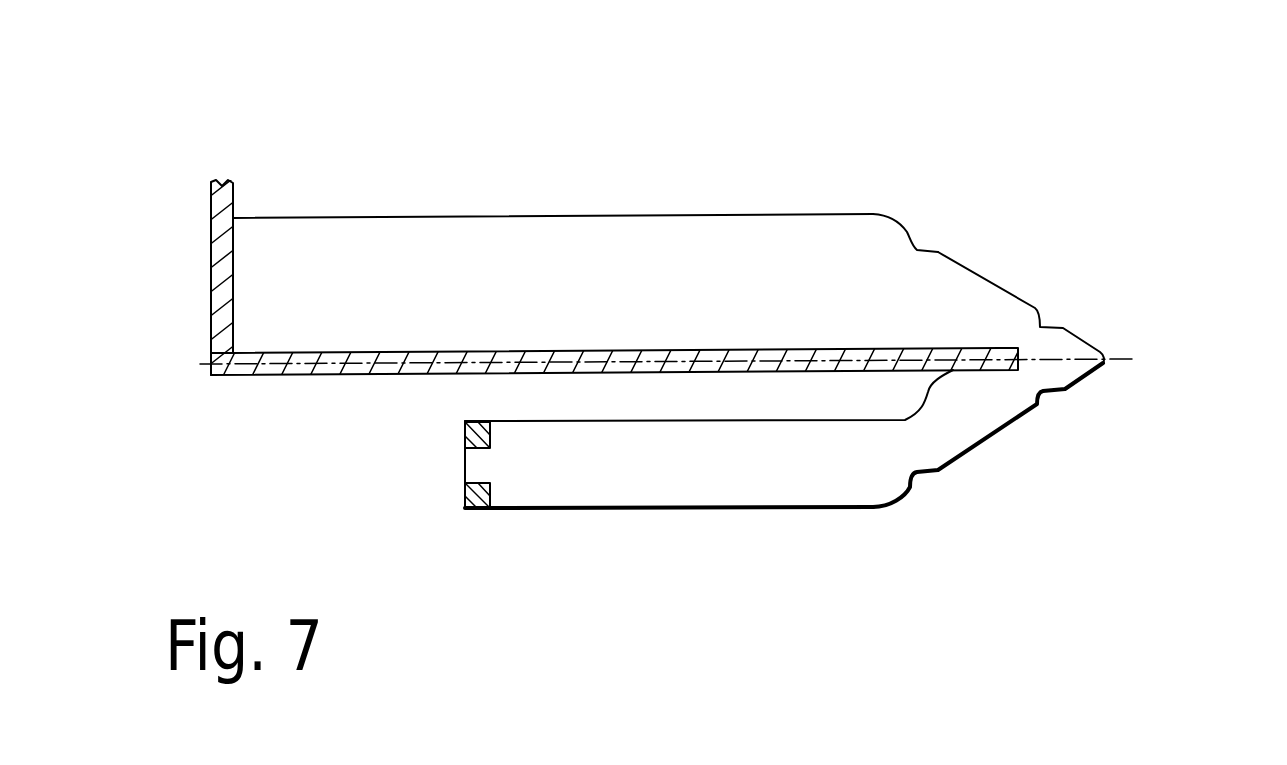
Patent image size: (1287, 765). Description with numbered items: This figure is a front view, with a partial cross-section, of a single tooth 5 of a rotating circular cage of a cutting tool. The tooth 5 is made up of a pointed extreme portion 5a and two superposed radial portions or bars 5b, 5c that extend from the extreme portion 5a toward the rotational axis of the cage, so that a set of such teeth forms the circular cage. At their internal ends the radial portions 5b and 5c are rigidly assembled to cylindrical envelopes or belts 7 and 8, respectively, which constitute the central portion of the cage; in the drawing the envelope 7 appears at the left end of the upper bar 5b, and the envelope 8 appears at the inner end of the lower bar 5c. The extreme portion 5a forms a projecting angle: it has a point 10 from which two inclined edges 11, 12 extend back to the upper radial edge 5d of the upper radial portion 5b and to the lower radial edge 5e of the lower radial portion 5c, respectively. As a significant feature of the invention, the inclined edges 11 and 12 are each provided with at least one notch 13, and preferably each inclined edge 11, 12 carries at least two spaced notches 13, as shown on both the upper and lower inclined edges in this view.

The tooth 5 is at (592, 146).
The extreme portion 5a is at (1000, 309).
The radial portion 5b is at (690, 242).
The radial portion 5c is at (803, 488).
The upper radial edge 5d is at (472, 215).
The lower radial edge 5e is at (681, 512).
The cylindrical envelope 7 is at (233, 183).
The cylindrical envelope 8 is at (472, 500).
The point 10 is at (1107, 362).
The inclined edge 11 is at (979, 271).
The inclined edge 12 is at (992, 448).
The notch 13 is at (925, 236).